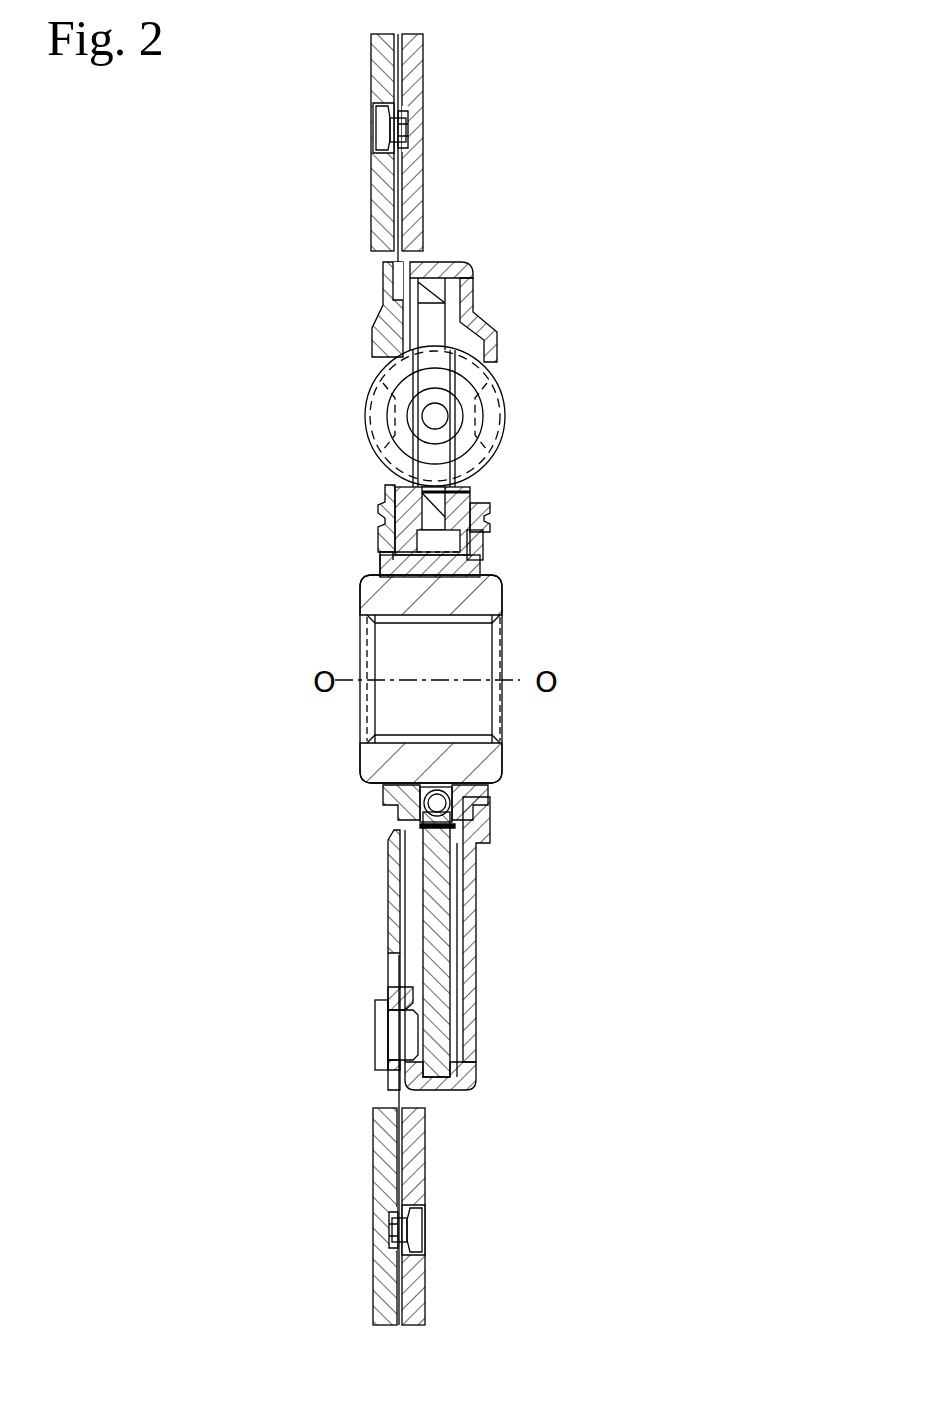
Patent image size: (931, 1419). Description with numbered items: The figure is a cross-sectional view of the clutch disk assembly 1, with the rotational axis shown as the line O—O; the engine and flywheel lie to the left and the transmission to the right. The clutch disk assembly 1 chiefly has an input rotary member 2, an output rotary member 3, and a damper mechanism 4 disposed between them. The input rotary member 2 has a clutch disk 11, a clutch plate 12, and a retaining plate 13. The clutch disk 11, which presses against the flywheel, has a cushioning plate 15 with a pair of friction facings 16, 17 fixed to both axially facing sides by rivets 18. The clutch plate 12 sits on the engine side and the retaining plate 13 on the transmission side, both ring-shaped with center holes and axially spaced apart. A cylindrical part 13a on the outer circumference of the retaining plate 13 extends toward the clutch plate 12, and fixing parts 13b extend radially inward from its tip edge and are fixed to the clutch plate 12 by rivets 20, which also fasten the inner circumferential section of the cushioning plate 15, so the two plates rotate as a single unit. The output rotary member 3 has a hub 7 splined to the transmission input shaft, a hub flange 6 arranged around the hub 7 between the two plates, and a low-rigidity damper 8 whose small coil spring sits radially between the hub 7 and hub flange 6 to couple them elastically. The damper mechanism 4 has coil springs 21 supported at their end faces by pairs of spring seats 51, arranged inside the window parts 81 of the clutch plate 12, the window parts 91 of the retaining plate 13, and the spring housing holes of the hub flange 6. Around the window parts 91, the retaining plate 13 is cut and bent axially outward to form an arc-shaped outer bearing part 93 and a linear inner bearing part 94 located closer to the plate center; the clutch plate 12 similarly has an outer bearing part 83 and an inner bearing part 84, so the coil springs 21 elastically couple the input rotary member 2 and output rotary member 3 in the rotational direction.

The clutch disk assembly 1 is at (206, 335).
The input rotary member 2 is at (352, 246).
The output rotary member 3 is at (423, 666).
The damper mechanism 4 is at (567, 419).
The hub flange 6 is at (443, 907).
The hub 7 is at (372, 768).
The low-rigidity damper 8 is at (456, 775).
The clutch disk 11 is at (389, 140).
The clutch plate 12 is at (387, 877).
The retaining plate 13 is at (408, 988).
The cylindrical part 13a is at (437, 1087).
The fixing parts 13b is at (404, 997).
The cushioning plate 15 is at (417, 262).
The friction facing 16 is at (379, 201).
The friction facing 17 is at (411, 196).
The rivets 18 is at (391, 129).
The rivets 20 is at (394, 1037).
The coil springs 21 is at (370, 442).
The spring seats 51 is at (366, 388).
The window parts 81 is at (368, 368).
The outer bearing part 83 is at (376, 314).
The inner bearing part 84 is at (368, 482).
The window parts 91 is at (517, 365).
The outer bearing part 93 is at (480, 326).
The inner bearing part 94 is at (494, 463).